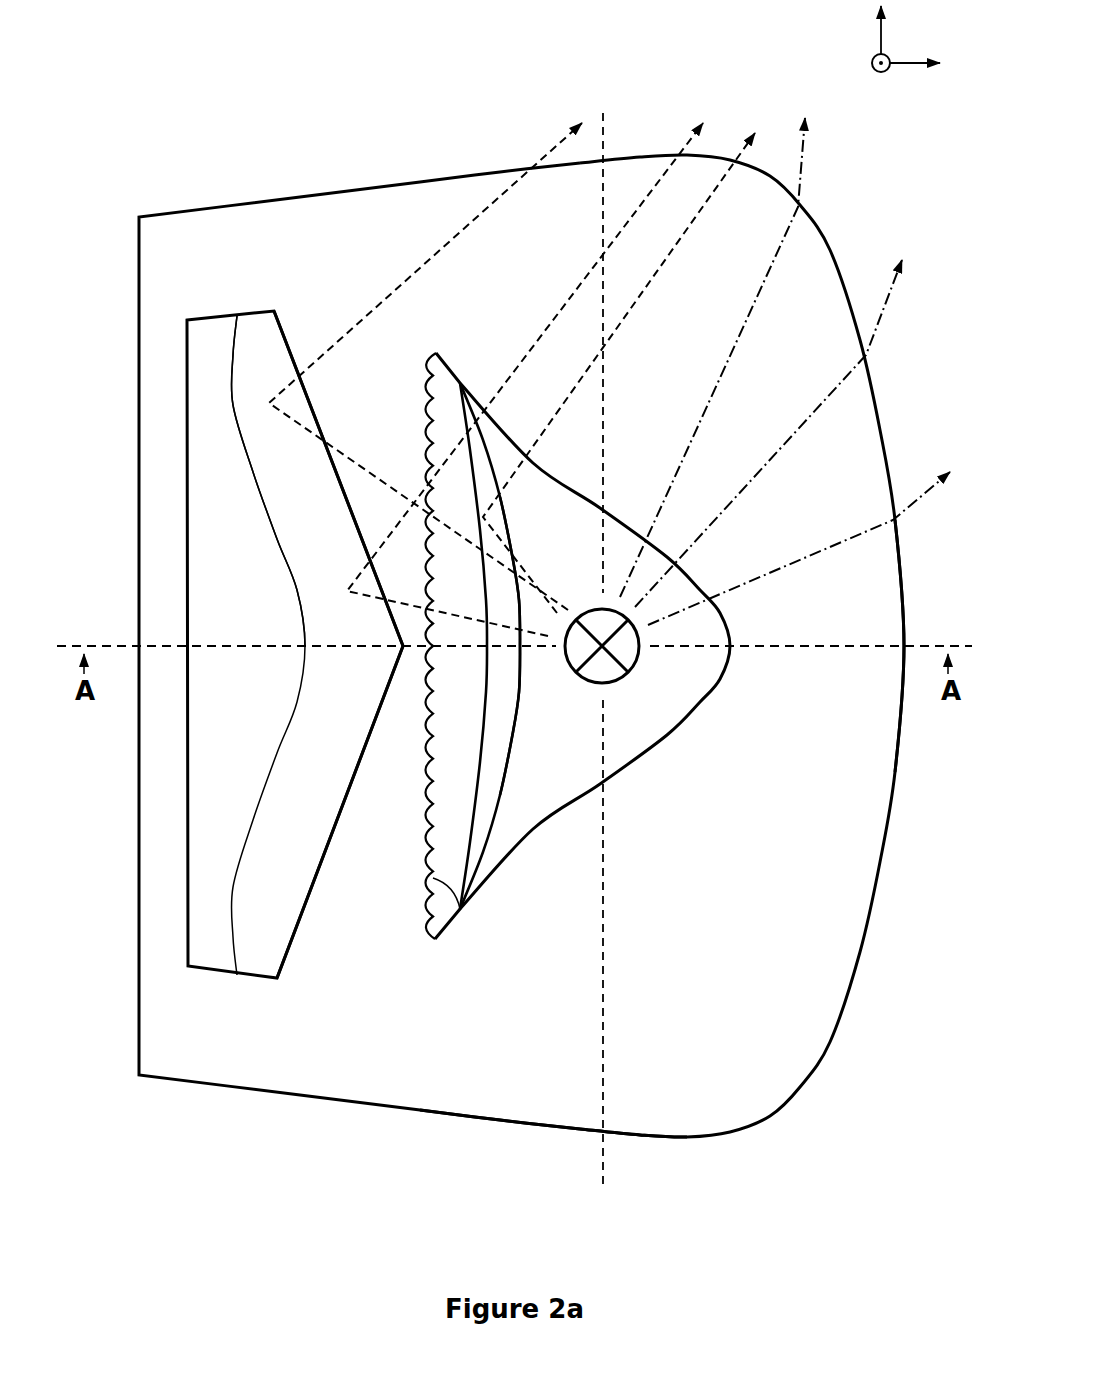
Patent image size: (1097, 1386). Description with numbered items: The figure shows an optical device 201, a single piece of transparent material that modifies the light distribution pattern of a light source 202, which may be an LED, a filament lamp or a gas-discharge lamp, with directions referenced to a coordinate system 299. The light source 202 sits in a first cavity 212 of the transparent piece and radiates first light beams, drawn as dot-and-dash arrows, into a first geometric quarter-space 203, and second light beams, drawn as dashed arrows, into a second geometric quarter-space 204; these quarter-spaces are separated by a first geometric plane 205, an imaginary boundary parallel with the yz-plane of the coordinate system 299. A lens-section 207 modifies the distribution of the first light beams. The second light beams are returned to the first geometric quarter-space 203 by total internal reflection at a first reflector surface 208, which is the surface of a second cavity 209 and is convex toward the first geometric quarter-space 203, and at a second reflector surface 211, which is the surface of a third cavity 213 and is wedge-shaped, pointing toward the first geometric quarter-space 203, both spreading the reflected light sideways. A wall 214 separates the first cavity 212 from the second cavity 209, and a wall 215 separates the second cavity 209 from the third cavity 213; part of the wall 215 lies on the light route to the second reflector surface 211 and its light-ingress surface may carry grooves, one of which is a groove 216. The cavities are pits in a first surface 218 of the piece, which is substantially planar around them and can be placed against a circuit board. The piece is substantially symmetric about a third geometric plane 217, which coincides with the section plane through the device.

The optical device 201 is at (218, 84).
The light source 202 is at (615, 683).
The first geometric quarter-space 203 is at (910, 214).
The second geometric quarter-space 204 is at (188, 184).
The first geometric plane 205 is at (607, 133).
The lens-section 207 is at (800, 844).
The first reflector surface 208 is at (492, 769).
The second cavity 209 is at (482, 691).
The second reflector surface 211 is at (328, 566).
The first cavity 212 is at (588, 744).
The third cavity 213 is at (270, 702).
The wall between first and second cavities 214 is at (502, 738).
The wall between second and third cavities 215 is at (418, 756).
The groove 216 is at (455, 906).
The third geometric plane 217 is at (923, 647).
The first surface 218 is at (577, 1049).
The coordinate system 299 is at (940, 42).